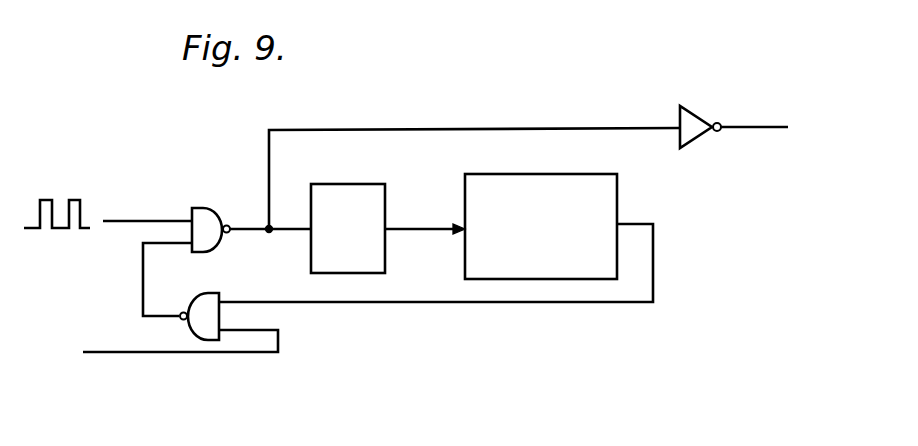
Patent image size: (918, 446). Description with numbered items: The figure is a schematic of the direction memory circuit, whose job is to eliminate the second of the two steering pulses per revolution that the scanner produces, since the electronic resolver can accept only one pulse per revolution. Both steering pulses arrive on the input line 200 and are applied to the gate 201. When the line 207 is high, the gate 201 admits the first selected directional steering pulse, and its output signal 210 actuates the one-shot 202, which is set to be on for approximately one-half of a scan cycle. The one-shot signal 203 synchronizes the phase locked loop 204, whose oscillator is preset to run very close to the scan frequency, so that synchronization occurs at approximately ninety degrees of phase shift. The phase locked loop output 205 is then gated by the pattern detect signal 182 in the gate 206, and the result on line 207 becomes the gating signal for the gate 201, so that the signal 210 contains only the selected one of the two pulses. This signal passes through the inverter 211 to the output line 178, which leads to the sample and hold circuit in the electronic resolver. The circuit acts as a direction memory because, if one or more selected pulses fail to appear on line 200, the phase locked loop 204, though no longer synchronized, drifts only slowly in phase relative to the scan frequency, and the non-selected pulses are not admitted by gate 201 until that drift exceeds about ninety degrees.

The output line 178 is at (750, 124).
The pattern detect signal 182 is at (172, 354).
The input line 200 is at (124, 219).
The gate 201 is at (207, 213).
The one-shot 202 is at (343, 195).
The one-shot signal 203 is at (418, 230).
The phase locked loop 204 is at (582, 246).
The feedback line 205 is at (653, 258).
The gate 206 is at (212, 300).
The line 207 is at (143, 282).
The signal 210 is at (415, 130).
The inverter 211 is at (694, 116).